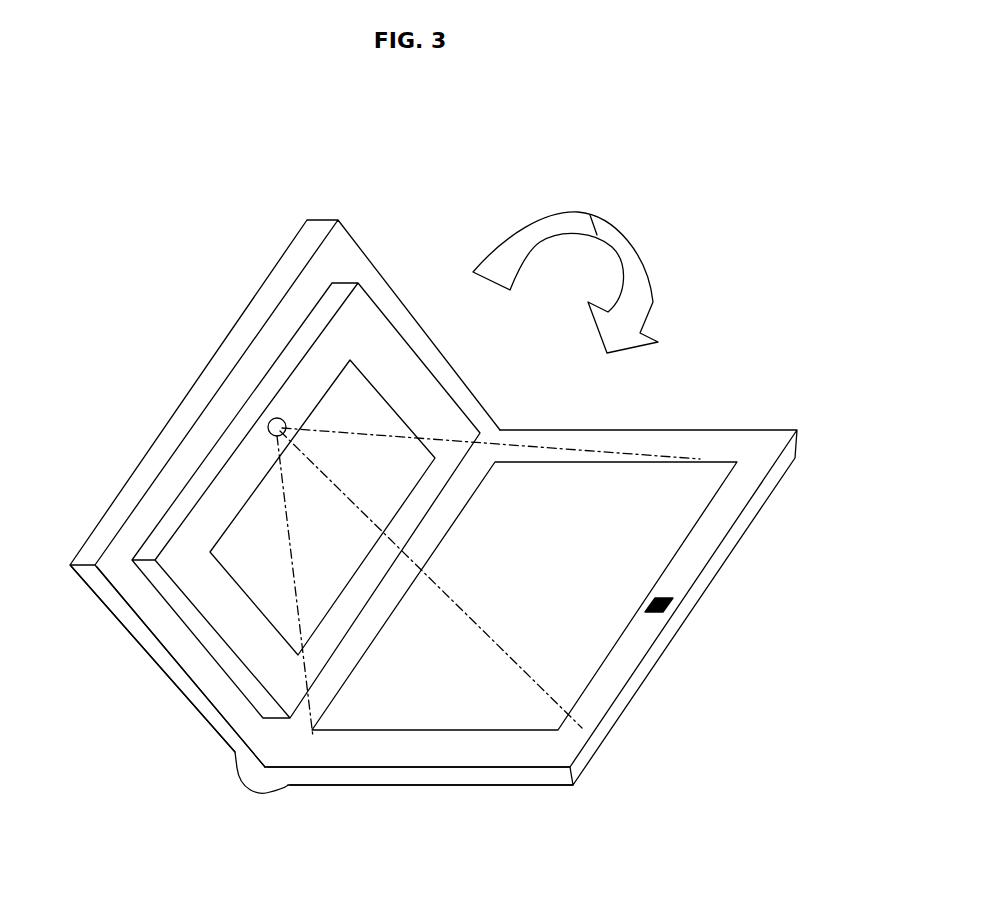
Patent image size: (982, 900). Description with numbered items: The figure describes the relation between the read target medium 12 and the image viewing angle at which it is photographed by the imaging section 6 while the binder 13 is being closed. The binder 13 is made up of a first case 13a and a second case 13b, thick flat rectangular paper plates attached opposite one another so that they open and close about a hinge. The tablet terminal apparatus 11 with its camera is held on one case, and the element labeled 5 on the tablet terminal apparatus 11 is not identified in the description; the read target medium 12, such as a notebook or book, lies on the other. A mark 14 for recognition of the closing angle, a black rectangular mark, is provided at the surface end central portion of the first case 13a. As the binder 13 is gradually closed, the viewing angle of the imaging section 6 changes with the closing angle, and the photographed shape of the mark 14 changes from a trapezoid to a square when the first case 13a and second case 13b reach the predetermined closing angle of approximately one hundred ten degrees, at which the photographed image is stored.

The display of first housing 5 is at (363, 407).
The imaging section 6 is at (272, 420).
The tablet terminal apparatus 11 is at (165, 603).
The read target medium 12 is at (662, 507).
The binder 13 is at (635, 428).
The first case 13a is at (403, 777).
The second case 13b is at (100, 587).
The mark for recognition of closing angle 14 is at (665, 612).